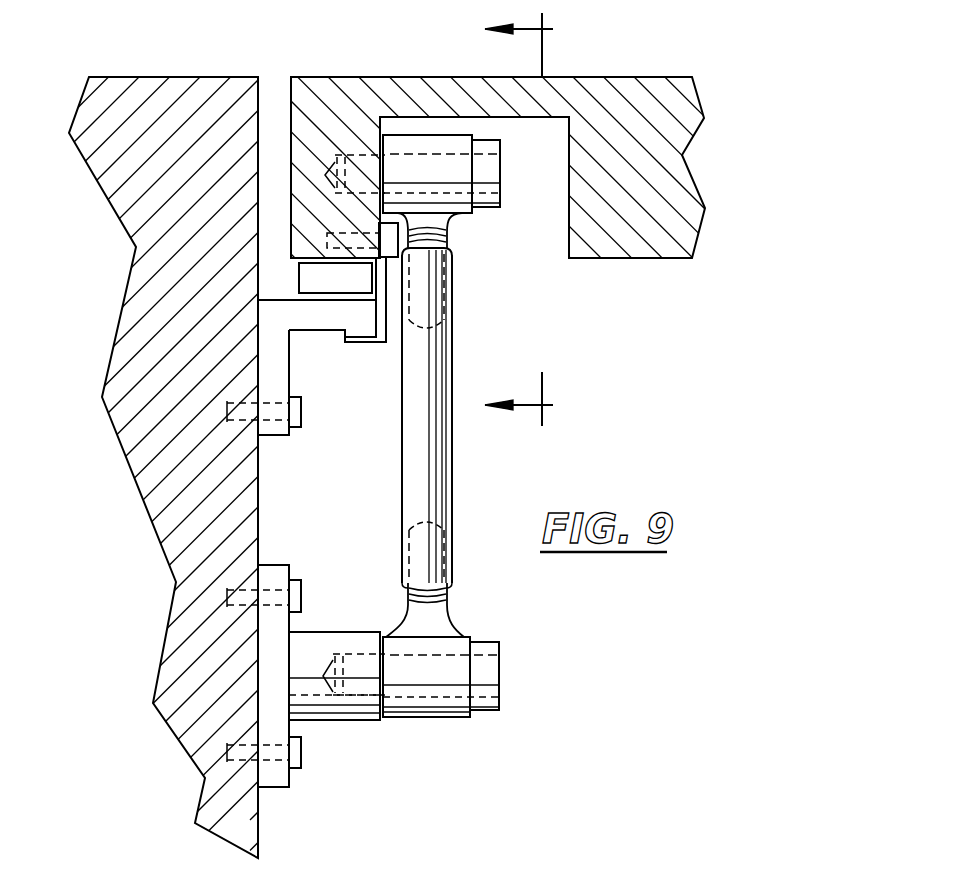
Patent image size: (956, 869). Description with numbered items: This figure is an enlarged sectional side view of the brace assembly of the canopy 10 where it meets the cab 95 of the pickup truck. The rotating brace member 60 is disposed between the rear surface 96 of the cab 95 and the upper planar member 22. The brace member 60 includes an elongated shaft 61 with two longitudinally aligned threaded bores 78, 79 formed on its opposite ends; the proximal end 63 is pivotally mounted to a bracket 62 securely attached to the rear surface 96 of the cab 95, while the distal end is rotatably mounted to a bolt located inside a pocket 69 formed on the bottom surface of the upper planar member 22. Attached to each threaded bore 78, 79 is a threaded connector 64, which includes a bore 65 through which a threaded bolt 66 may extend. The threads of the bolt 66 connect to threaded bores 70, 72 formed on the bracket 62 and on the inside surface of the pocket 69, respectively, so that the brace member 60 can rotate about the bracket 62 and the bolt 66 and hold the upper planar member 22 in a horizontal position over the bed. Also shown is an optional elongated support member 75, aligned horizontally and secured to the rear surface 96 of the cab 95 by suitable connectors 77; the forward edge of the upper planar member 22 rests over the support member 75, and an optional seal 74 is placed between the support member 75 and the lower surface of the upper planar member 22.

The canopy 10 is at (597, 41).
The upper planar member 22 is at (658, 78).
The brace member 60 is at (440, 474).
The elongated shaft 61 is at (433, 490).
The bracket 62 is at (336, 636).
The proximal end 63 is at (428, 288).
The threaded connector 64 is at (423, 308).
The bore 65 is at (455, 182).
The threaded bolt 66 is at (488, 150).
The pocket 69 is at (584, 315).
The threaded bore 70 is at (341, 700).
The threaded bore 72 is at (342, 160).
The seal 74 is at (313, 278).
The support member 75 is at (316, 361).
The connector 77 is at (300, 412).
The threaded bore 78 is at (447, 230).
The threaded bore 79 is at (438, 598).
The cab 95 is at (212, 77).
The rear surface 96 is at (258, 105).